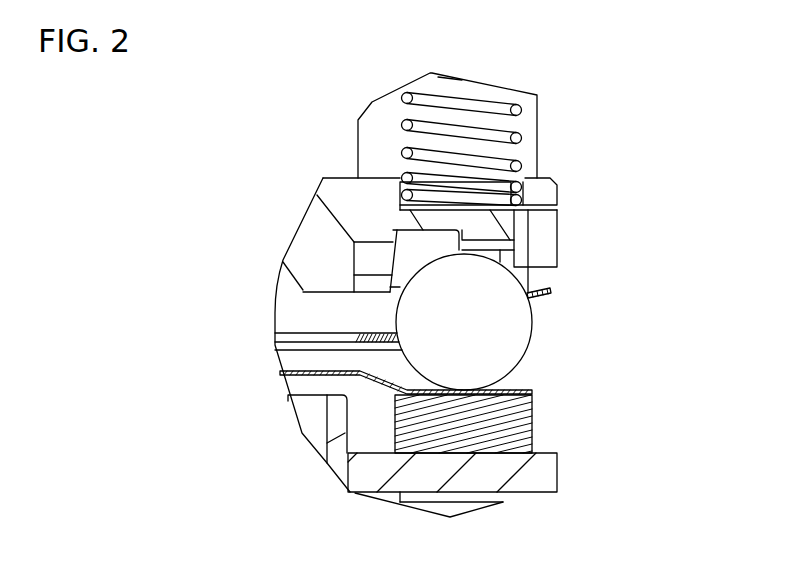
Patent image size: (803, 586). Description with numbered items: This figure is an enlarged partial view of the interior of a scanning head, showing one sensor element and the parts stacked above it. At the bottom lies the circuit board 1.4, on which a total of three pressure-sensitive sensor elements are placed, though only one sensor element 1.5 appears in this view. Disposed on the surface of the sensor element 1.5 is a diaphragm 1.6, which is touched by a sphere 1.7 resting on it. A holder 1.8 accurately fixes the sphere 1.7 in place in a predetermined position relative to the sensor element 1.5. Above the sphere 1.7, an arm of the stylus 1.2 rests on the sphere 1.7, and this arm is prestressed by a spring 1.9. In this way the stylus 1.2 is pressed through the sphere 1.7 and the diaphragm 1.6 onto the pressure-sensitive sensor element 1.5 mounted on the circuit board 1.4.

The spring 1.9 is at (516, 138).
The stylus 1.2 is at (505, 218).
The holder 1.8 is at (551, 291).
The sphere 1.7 is at (515, 330).
The diaphragm 1.6 is at (505, 392).
The pressure-sensitive sensor element 1.5 is at (532, 437).
The circuit board 1.4 is at (550, 480).